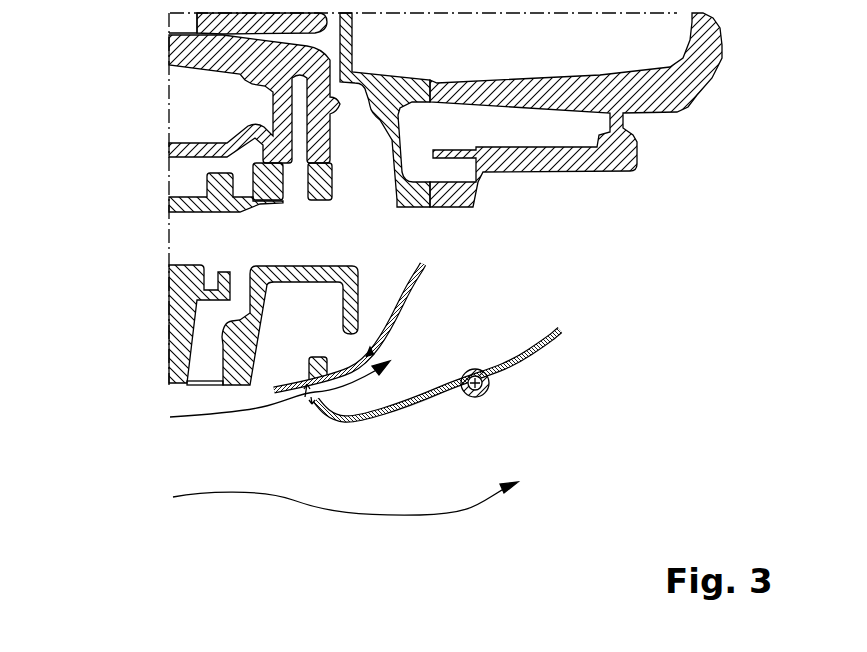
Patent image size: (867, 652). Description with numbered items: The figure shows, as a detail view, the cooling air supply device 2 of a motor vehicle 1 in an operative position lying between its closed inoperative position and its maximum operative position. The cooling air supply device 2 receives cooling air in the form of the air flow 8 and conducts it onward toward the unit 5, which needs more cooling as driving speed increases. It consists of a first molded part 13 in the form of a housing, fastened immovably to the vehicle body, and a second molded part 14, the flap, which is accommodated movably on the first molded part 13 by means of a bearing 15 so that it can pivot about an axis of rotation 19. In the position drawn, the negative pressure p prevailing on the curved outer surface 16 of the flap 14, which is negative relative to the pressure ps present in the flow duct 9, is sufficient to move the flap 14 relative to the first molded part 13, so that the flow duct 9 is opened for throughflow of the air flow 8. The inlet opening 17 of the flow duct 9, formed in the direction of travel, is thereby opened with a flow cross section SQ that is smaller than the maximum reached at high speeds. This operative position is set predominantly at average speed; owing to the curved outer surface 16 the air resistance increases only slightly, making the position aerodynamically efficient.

The motor vehicle 1 is at (138, 177).
The cooling air supply device 2 is at (513, 313).
The unit 5 is at (690, 90).
The air flow 8 is at (417, 517).
The flow duct 9 is at (430, 369).
The first molded part 13 is at (412, 300).
The second molded part 14 is at (437, 404).
The bearing 15 is at (491, 400).
The outer surface 16 is at (398, 420).
The inlet opening 17 is at (293, 402).
The axis of rotation 19 is at (470, 398).
The flow cross section SQ is at (310, 397).
The pressure present in the flow duct ps is at (382, 387).
The pressure prevailing at the flap p is at (361, 451).